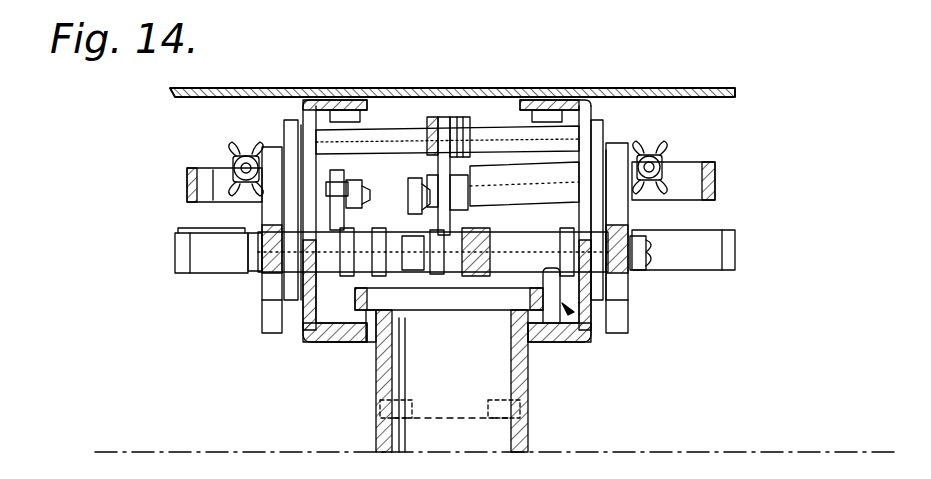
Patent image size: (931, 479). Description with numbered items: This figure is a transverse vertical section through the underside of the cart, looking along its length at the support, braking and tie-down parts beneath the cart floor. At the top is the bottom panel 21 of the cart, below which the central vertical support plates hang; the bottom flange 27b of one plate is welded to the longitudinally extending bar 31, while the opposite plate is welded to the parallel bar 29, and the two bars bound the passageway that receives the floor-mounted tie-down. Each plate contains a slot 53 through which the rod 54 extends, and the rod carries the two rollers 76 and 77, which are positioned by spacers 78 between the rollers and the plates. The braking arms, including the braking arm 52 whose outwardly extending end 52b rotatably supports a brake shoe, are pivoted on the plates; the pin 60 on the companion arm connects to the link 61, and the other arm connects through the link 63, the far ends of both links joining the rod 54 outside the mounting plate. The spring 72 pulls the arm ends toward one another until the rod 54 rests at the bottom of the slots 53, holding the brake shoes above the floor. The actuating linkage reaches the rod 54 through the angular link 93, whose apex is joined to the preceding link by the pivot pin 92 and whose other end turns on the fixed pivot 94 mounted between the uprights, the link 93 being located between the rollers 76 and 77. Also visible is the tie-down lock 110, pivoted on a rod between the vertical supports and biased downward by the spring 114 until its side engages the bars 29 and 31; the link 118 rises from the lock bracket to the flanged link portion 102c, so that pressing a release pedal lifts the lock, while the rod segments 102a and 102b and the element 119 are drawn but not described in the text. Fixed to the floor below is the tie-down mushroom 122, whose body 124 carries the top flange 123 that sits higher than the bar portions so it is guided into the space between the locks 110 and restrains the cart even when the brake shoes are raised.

The bottom panel 21 is at (624, 88).
The bottom flange 27b is at (350, 344).
The bar 29 is at (575, 344).
The bar 31 is at (330, 344).
The braking arm 52 is at (270, 322).
The end of arm 52b is at (188, 250).
The slot 53 is at (592, 122).
The rod 54 is at (656, 262).
The pin 60 is at (226, 163).
The link 61 is at (258, 275).
The link 63 is at (290, 280).
The spring 72 is at (250, 146).
The roller 76 is at (490, 238).
The roller 77 is at (410, 236).
The spacer 78 is at (548, 240).
The pivot pin 92 is at (414, 206).
The angular link 93 is at (449, 299).
The fixed pivot 94 is at (405, 132).
The rod 102a is at (549, 182).
The threaded rod 102b is at (440, 117).
The link portion 102c is at (213, 192).
The tie-down lock 110 is at (572, 312).
The spring 114 is at (622, 290).
The link 118 is at (345, 220).
The nut 119 is at (364, 194).
The tie-down mushroom 122 is at (530, 398).
The top flange 123 is at (550, 344).
The body 124 is at (509, 362).